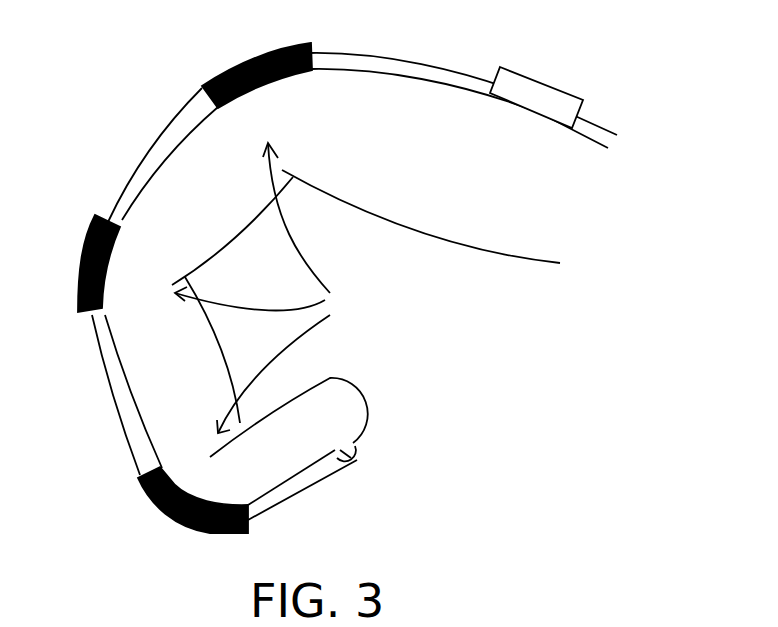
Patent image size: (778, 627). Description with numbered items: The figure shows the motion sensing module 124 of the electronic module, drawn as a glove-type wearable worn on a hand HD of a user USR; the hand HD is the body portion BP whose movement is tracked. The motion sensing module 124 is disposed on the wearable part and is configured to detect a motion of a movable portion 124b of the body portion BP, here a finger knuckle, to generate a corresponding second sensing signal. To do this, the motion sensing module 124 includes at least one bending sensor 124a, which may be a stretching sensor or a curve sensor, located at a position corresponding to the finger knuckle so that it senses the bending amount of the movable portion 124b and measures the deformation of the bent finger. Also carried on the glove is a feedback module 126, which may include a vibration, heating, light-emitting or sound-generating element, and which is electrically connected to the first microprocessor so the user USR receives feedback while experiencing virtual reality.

The motion sensing module 124 is at (160, 163).
The bending sensor 124a is at (218, 72).
The movable portion 124b is at (280, 288).
The feedback module 126 is at (357, 452).
The user USR is at (456, 301).
The hand HD is at (428, 316).
The body portion BP is at (557, 176).